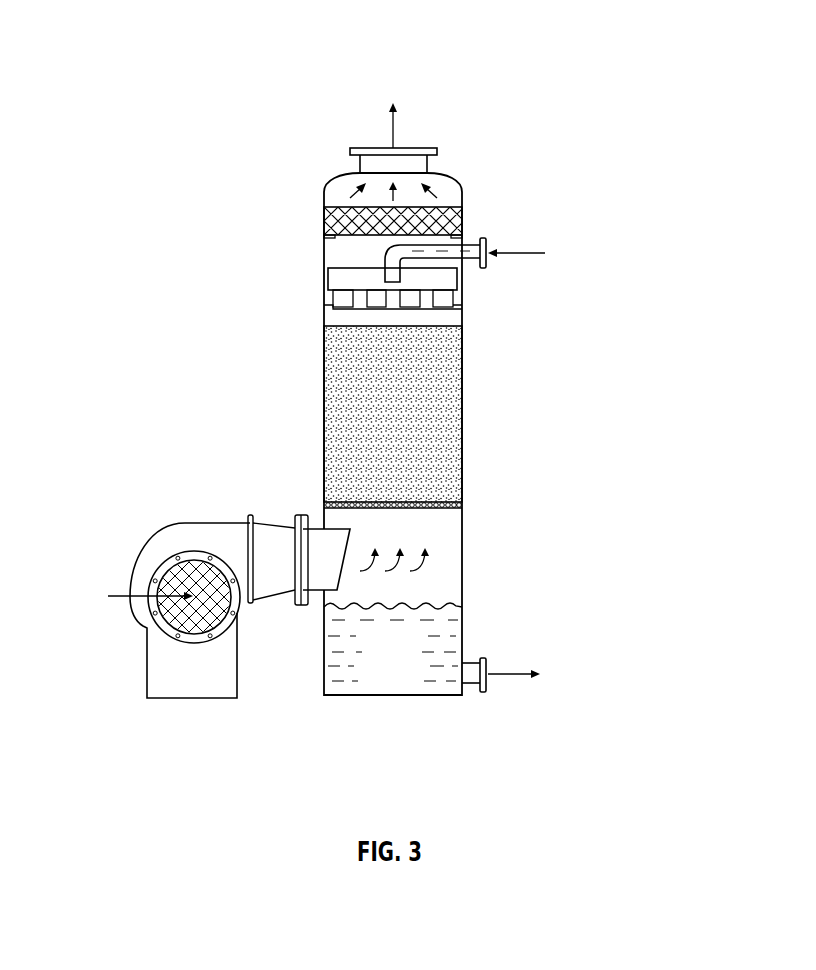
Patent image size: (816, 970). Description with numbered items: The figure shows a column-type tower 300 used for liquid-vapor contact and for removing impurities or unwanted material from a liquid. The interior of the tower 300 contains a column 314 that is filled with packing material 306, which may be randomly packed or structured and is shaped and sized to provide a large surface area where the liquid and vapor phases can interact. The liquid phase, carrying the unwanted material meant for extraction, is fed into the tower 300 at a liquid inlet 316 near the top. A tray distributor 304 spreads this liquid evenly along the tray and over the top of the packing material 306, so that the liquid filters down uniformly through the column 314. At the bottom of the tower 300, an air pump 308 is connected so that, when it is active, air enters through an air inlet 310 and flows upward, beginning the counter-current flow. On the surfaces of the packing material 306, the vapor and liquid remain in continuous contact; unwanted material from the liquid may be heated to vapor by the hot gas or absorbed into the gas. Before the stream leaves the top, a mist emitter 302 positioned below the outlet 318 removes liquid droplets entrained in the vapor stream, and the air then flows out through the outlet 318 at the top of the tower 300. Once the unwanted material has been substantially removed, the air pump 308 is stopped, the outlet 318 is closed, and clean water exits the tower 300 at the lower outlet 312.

The tower 300 is at (212, 30).
The mist emitter 302 is at (322, 209).
The tray distributor 304 is at (322, 275).
The packing material 306 is at (316, 391).
The air pump 308 is at (152, 542).
The air inlet 310 is at (215, 610).
The outlet 312 is at (488, 690).
The column 314 is at (463, 407).
The liquid inlet 316 is at (487, 268).
The outlet 318 is at (438, 152).